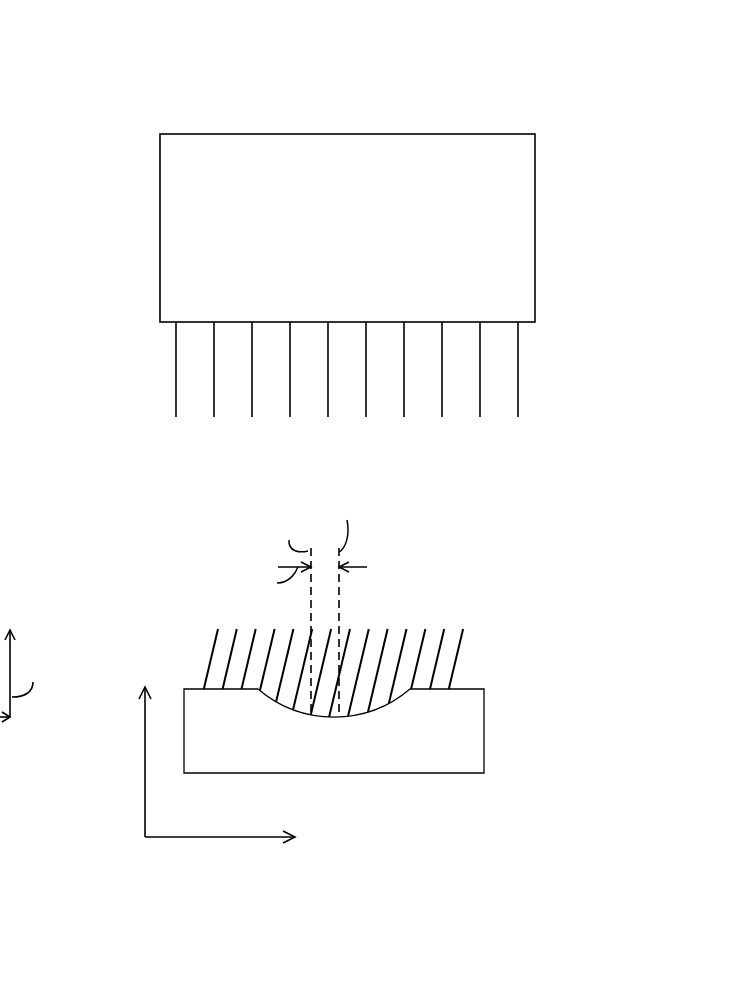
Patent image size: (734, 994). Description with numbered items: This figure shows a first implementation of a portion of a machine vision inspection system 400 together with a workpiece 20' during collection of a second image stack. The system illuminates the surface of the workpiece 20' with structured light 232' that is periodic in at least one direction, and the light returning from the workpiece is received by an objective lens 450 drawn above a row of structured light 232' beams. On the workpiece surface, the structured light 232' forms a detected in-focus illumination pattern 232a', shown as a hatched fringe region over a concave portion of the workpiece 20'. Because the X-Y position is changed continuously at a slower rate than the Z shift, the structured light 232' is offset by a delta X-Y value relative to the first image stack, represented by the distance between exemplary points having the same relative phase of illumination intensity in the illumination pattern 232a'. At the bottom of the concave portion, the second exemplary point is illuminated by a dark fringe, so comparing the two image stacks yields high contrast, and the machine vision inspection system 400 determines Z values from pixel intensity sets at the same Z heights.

The machine vision inspection system 400 is at (633, 87).
The objective lens 450 is at (535, 233).
The structured light 232' is at (400, 369).
The in-focus illumination pattern 232a' is at (402, 673).
The workpiece 20' is at (377, 741).